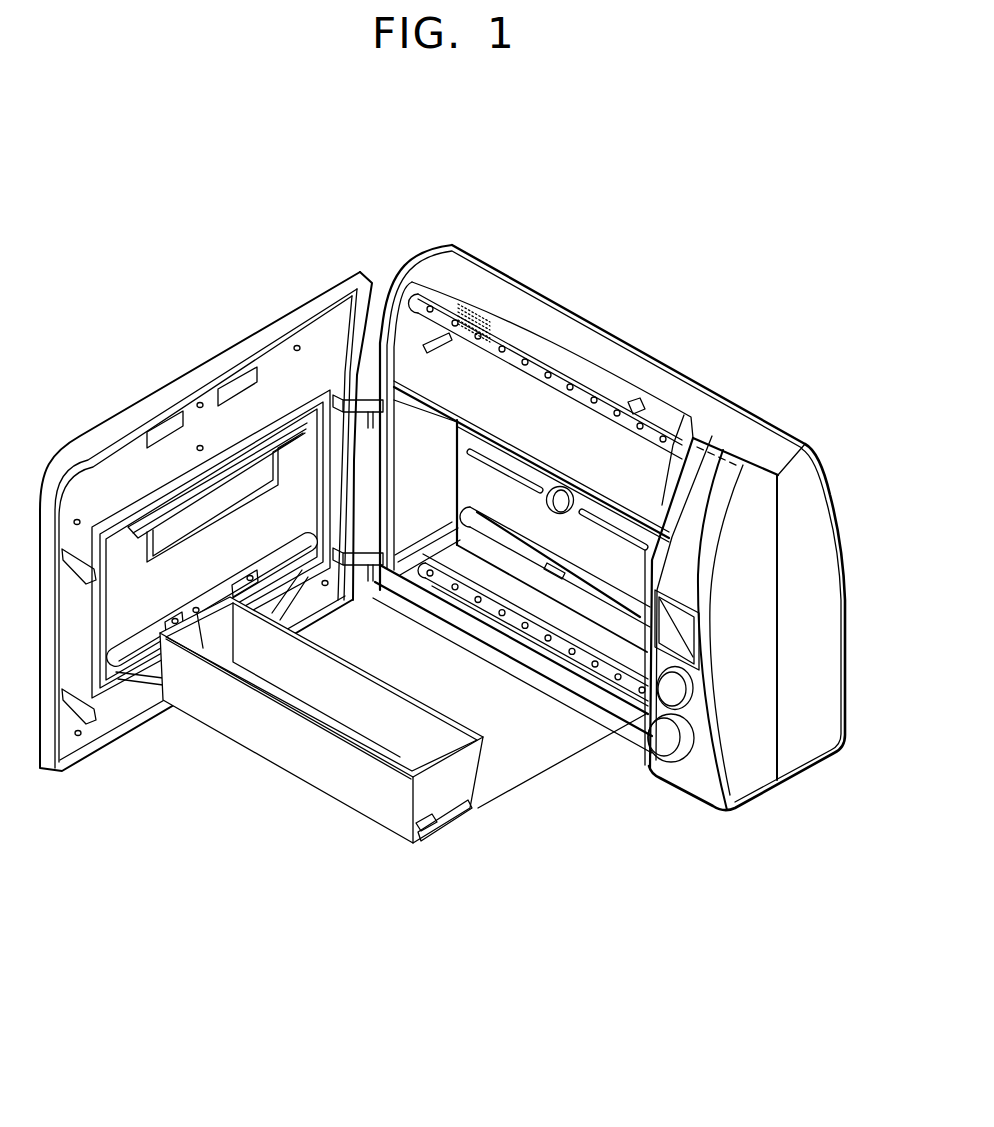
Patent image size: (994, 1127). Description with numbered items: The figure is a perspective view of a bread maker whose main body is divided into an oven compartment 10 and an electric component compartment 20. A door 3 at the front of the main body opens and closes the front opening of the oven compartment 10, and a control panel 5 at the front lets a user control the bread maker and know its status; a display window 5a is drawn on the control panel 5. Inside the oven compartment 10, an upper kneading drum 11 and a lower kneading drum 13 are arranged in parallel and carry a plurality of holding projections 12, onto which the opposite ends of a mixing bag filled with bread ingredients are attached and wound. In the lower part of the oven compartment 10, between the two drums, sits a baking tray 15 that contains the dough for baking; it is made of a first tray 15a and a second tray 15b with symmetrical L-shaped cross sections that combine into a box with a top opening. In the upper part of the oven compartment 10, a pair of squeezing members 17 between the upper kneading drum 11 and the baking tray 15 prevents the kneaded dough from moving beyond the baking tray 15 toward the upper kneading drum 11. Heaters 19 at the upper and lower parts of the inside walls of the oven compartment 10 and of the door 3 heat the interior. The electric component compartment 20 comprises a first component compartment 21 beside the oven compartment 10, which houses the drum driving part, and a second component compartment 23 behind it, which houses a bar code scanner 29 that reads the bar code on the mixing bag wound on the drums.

The door 3 is at (205, 351).
The control panel 5 is at (677, 782).
The display window 5a is at (683, 625).
The oven compartment 10 is at (435, 508).
The upper kneading drum 11 is at (510, 352).
The holding projections 12 is at (527, 443).
The lower kneading drum 13 is at (463, 593).
The baking tray 15 is at (420, 903).
The first tray 15a is at (428, 810).
The second tray 15b is at (453, 802).
The squeezing members 17 is at (637, 402).
The heaters 19 is at (150, 655).
The electric component compartment 20 is at (766, 334).
The first component compartment 21 is at (755, 541).
The second component compartment 23 is at (709, 391).
The bar code scanner 29 is at (690, 402).